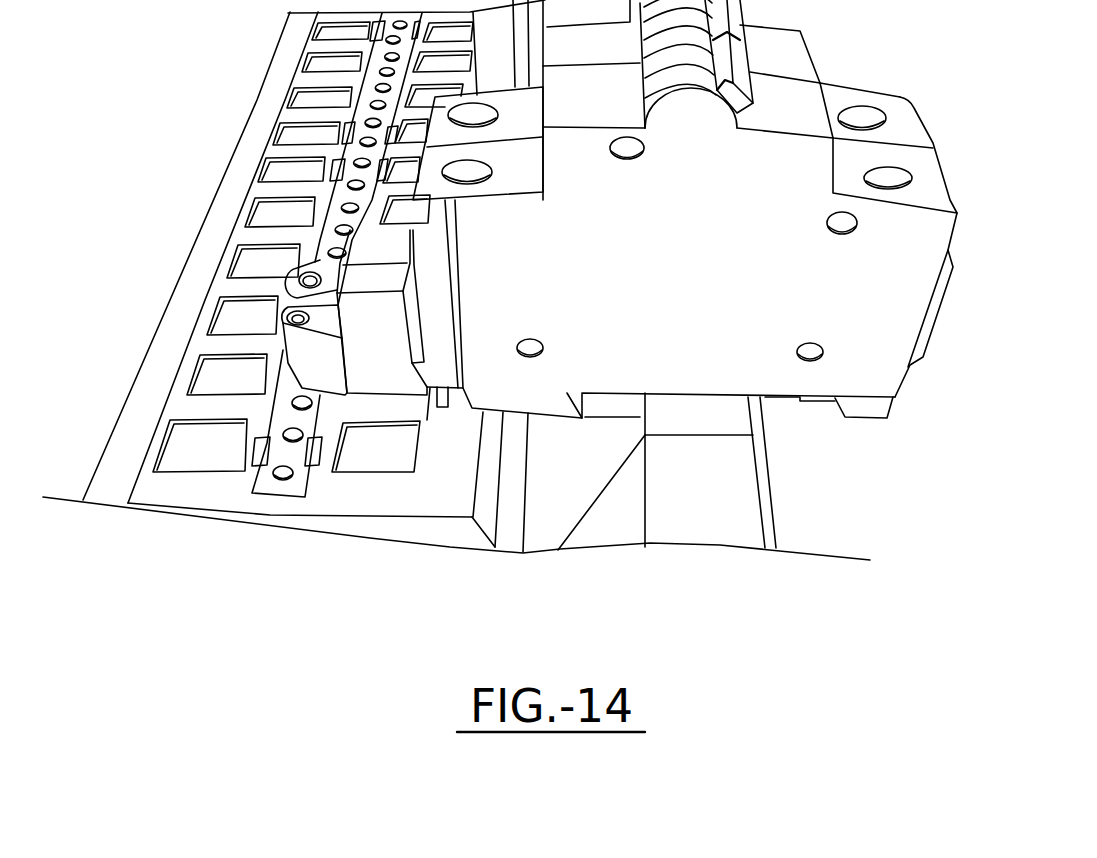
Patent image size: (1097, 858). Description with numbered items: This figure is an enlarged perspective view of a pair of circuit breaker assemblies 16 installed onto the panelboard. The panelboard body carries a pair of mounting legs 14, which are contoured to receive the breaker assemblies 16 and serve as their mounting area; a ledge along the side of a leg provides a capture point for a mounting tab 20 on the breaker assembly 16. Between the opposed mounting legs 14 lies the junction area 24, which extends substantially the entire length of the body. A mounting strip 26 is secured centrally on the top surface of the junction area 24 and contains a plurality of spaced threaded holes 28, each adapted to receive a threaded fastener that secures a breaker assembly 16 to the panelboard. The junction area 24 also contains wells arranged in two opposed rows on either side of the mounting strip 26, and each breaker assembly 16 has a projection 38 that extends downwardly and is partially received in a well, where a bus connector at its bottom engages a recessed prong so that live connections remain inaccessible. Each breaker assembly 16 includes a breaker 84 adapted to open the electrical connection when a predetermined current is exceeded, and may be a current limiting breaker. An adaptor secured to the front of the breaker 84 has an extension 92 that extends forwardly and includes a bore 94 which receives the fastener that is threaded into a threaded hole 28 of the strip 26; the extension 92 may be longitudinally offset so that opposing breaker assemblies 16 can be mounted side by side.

The mounting leg 14 is at (693, 517).
The circuit breaker assembly 16 is at (713, 201).
The mounting tab 20 is at (778, 403).
The junction area 24 is at (272, 500).
The mounting strip 26 is at (282, 415).
The threaded hole 28 is at (302, 433).
The projection 38 is at (380, 333).
The breaker 84 is at (705, 342).
The extension 92 is at (283, 340).
The bore 94 is at (297, 315).